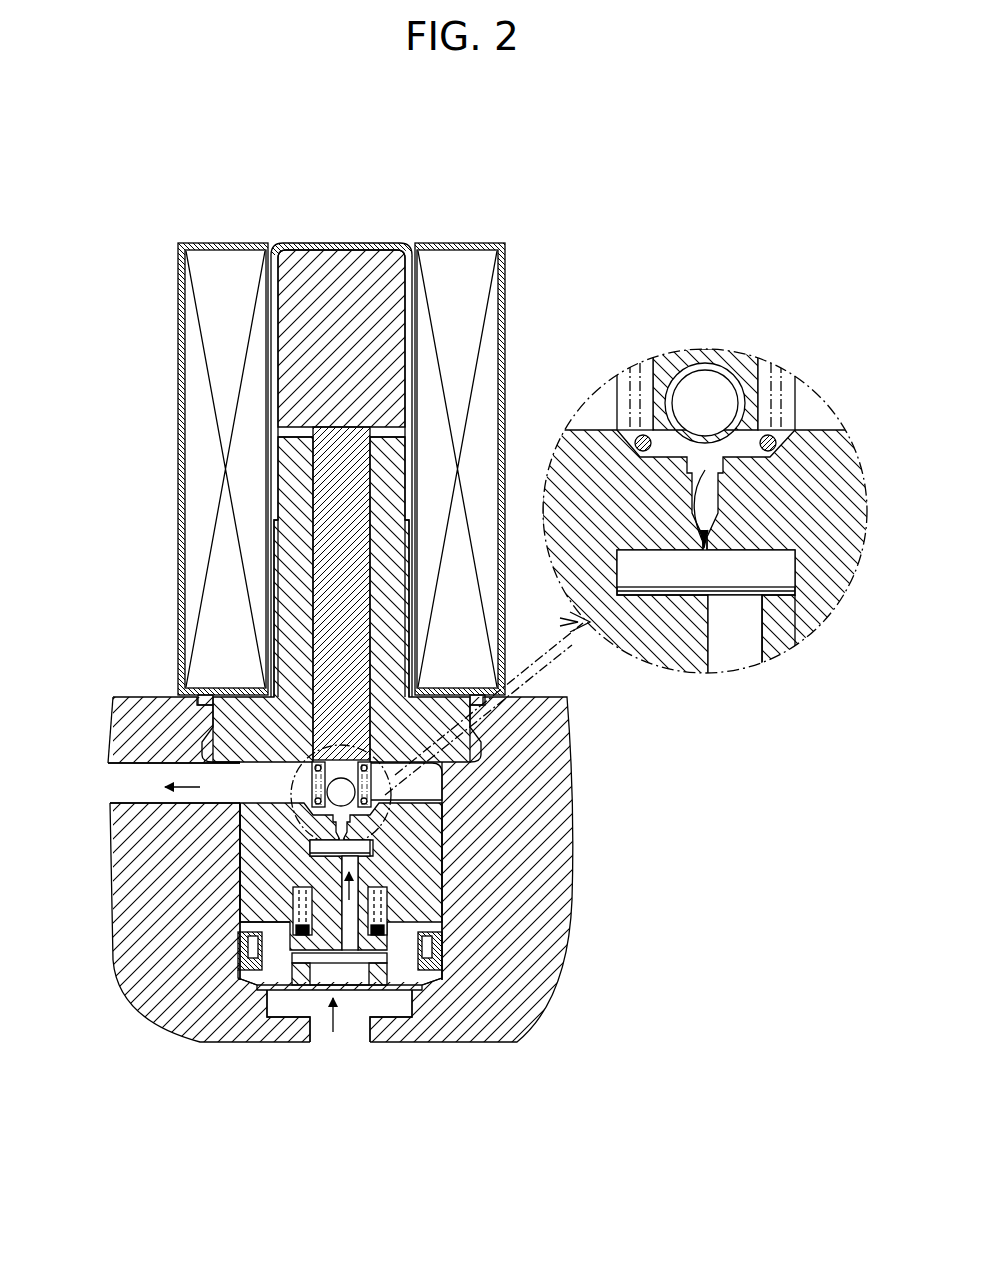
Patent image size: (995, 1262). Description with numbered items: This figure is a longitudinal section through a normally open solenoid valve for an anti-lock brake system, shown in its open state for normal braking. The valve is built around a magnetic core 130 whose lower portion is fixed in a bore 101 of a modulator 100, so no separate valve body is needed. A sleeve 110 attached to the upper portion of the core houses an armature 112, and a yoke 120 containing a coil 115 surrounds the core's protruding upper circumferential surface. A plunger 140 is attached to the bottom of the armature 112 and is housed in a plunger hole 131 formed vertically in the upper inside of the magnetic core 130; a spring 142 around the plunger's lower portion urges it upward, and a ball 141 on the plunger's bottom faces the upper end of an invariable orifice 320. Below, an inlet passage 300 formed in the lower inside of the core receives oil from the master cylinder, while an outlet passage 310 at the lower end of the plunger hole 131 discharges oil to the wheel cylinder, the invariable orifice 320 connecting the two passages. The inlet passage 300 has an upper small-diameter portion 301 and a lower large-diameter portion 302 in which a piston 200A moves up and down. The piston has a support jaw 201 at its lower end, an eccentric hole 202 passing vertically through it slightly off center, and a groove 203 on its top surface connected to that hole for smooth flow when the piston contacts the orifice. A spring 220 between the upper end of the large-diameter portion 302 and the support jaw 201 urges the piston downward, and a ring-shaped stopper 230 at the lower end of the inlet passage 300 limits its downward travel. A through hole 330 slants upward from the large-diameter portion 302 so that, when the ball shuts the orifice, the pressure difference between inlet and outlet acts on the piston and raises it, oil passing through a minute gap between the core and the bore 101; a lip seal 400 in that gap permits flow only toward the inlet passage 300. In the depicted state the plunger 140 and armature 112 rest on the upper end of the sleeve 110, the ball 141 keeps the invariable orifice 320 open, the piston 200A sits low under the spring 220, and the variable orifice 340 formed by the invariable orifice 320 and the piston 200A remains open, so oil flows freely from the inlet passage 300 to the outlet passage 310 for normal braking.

The modulator 100 is at (545, 742).
The bore 101 is at (442, 800).
The sleeve 110 is at (343, 243).
The armature 112 is at (316, 243).
The coil 115 is at (207, 397).
The yoke 120 is at (180, 337).
The magnetic core 130 is at (290, 545).
The plunger hole 131 is at (285, 472).
The plunger 140 is at (327, 588).
The ball 141 is at (355, 790).
The spring 142 is at (310, 764).
The piston 200A is at (275, 975).
The support jaw 201 is at (430, 950).
The eccentric hole 202 is at (342, 958).
The groove 203 is at (772, 572).
The spring 220 is at (400, 925).
The ring-shaped stopper 230 is at (300, 975).
The inlet passage 300 is at (352, 978).
The small-diameter portion 301 is at (262, 830).
The large-diameter portion 302 is at (292, 900).
The outlet passage 310 is at (243, 790).
The invariable orifice 320 is at (430, 858).
The through hole 330 is at (372, 848).
The variable orifice 340 is at (716, 528).
The lip seal 400 is at (245, 940).